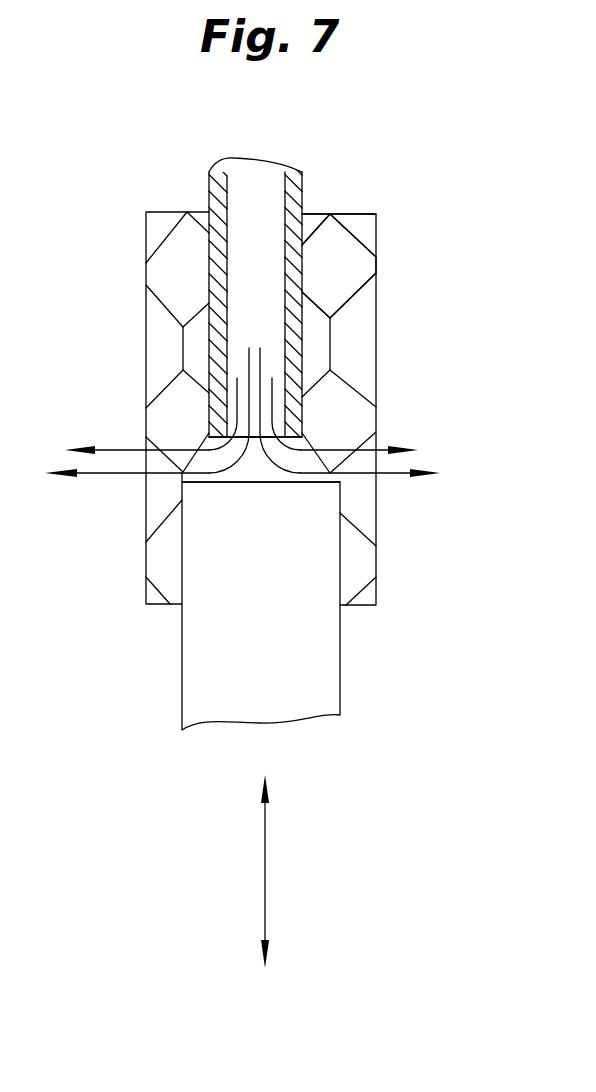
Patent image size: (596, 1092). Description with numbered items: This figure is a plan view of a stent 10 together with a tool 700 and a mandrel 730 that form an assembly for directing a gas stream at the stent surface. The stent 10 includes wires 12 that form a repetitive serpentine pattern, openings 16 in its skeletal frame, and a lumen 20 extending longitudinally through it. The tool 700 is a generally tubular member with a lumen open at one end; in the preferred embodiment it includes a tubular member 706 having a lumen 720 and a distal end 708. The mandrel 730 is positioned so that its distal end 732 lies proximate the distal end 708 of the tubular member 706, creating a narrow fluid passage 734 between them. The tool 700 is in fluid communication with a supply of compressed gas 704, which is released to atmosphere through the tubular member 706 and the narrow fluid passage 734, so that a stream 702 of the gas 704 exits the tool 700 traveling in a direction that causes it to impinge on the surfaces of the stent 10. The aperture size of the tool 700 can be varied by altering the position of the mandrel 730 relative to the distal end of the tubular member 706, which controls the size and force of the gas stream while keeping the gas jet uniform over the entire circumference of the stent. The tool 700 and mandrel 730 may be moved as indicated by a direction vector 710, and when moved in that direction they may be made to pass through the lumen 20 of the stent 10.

The stent 10 is at (118, 358).
The wires 12 is at (347, 299).
The openings 16 is at (335, 252).
The lumen 20 is at (176, 271).
The tool 700 is at (340, 272).
The stream 702 is at (98, 449).
The gas 704 is at (393, 450).
The tubular member 706 is at (290, 203).
The distal end 708 is at (300, 438).
The direction vector 710 is at (266, 882).
The lumen 720 is at (252, 203).
The mandrel 730 is at (250, 672).
The distal end 732 is at (248, 482).
The narrow fluid passage 734 is at (258, 460).